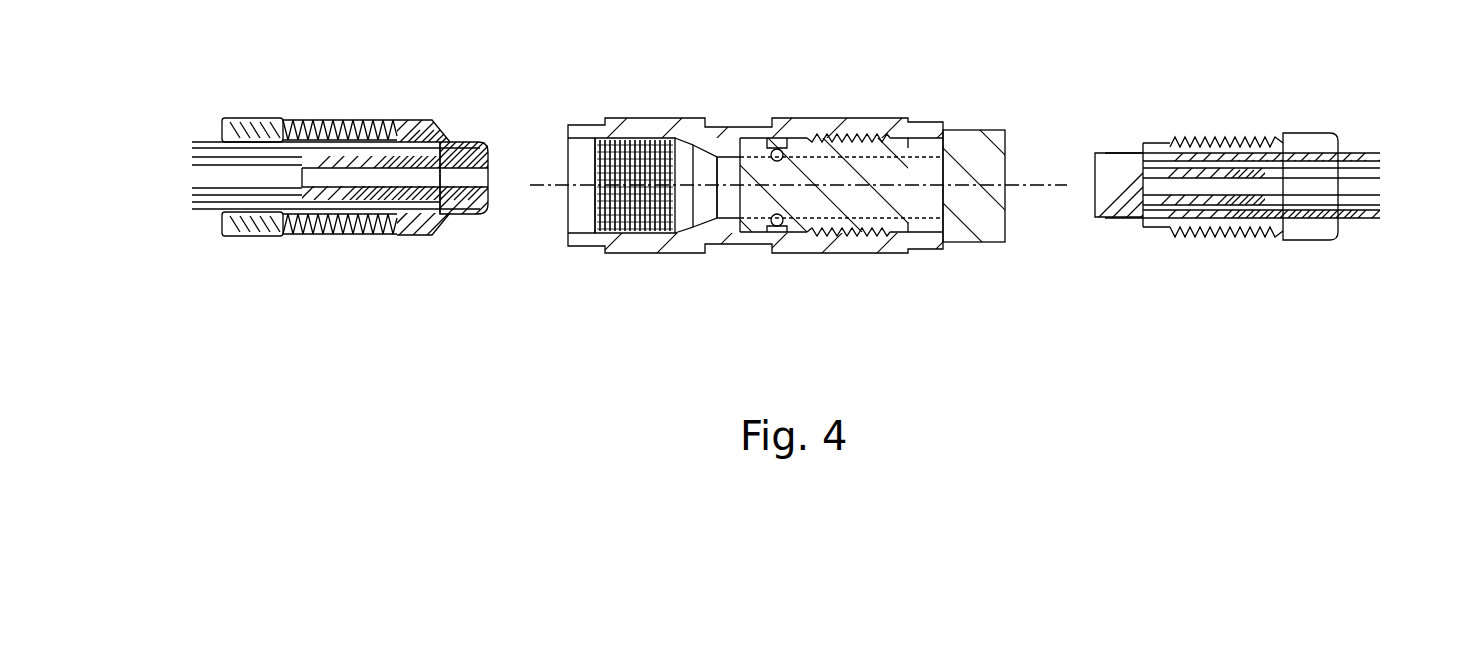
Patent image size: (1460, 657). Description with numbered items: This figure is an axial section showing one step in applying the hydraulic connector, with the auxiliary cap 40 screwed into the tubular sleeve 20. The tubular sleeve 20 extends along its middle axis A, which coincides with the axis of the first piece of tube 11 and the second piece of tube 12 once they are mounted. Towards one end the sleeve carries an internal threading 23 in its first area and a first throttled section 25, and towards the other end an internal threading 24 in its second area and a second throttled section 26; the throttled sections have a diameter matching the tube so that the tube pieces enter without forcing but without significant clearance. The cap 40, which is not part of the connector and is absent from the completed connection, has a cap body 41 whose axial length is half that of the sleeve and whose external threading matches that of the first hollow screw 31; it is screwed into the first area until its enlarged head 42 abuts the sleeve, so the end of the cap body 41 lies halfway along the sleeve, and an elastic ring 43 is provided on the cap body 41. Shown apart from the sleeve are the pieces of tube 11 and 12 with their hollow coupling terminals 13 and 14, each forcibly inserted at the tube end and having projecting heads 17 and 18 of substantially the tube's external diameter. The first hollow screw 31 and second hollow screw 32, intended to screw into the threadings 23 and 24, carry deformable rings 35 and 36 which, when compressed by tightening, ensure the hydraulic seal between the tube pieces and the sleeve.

The first piece of tube 11 is at (1352, 210).
The second piece of tube 12 is at (220, 197).
The coupling terminal 13 is at (1283, 205).
The coupling terminal 14 is at (288, 150).
The projecting head 17 is at (1118, 207).
The projecting head 18 is at (457, 203).
The tubular sleeve 20 is at (742, 138).
The internal threading 23 is at (833, 227).
The internal threading 24 is at (638, 233).
The first throttled section 25 is at (747, 222).
The second throttled section 26 is at (720, 222).
The first hollow screw 31 is at (1293, 143).
The second hollow screw 32 is at (260, 132).
The deformable ring 35 is at (1143, 143).
The deformable ring 36 is at (417, 132).
The cap 40 is at (969, 263).
The cap body 41 is at (800, 185).
The enlarged head 42 is at (943, 168).
The elastic ring 43 is at (780, 150).
The middle axis A is at (1022, 187).